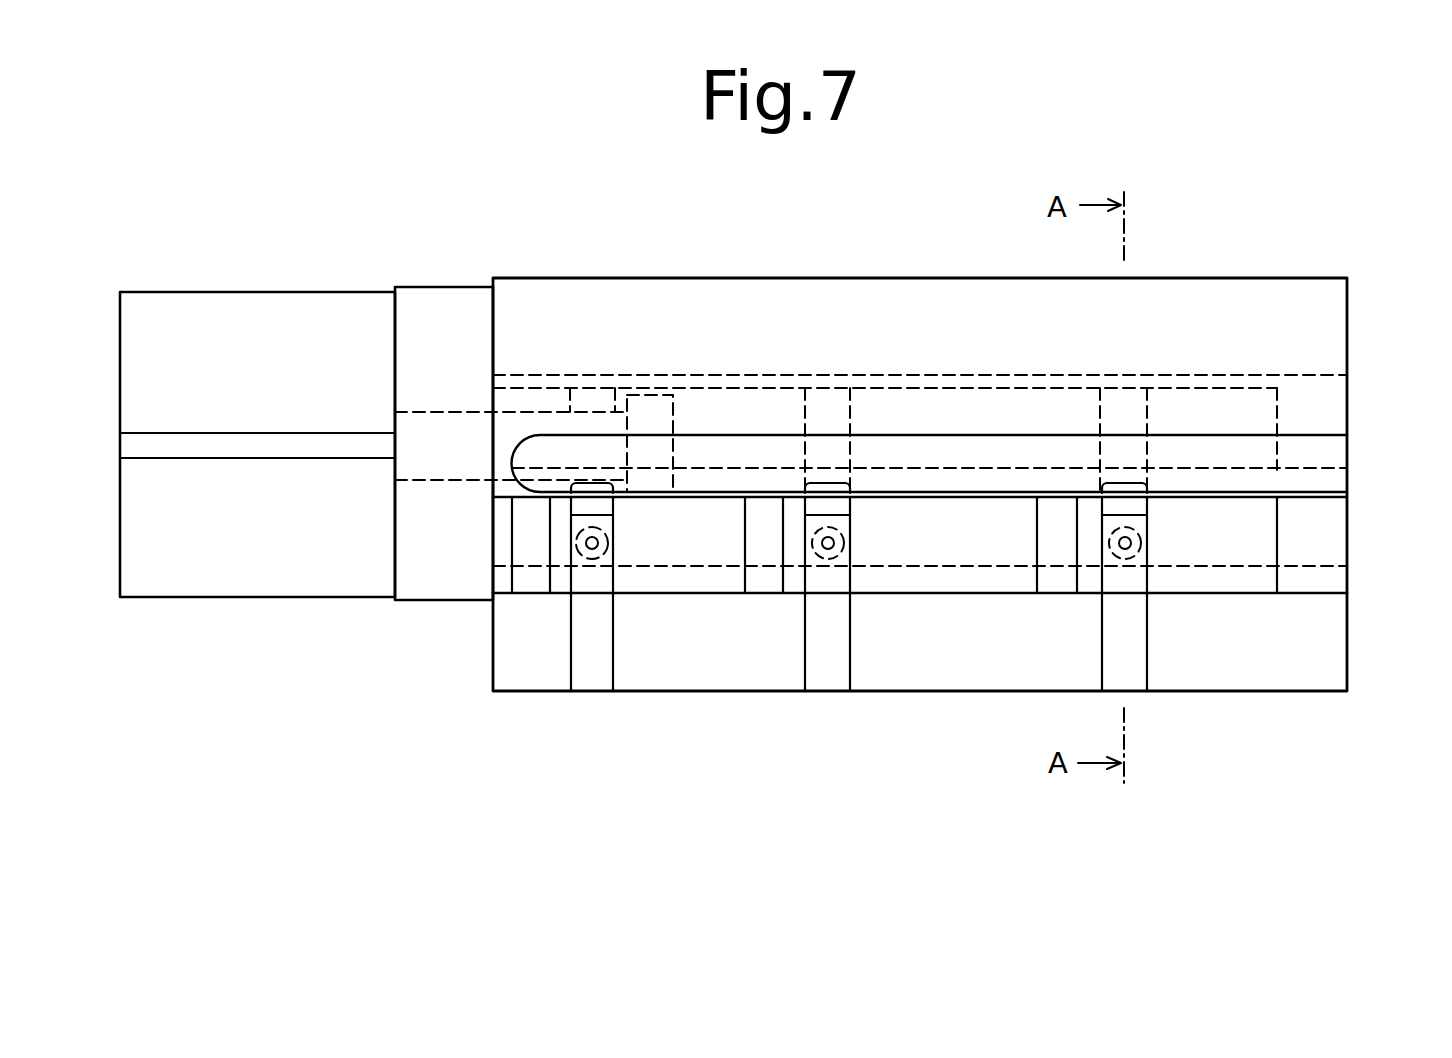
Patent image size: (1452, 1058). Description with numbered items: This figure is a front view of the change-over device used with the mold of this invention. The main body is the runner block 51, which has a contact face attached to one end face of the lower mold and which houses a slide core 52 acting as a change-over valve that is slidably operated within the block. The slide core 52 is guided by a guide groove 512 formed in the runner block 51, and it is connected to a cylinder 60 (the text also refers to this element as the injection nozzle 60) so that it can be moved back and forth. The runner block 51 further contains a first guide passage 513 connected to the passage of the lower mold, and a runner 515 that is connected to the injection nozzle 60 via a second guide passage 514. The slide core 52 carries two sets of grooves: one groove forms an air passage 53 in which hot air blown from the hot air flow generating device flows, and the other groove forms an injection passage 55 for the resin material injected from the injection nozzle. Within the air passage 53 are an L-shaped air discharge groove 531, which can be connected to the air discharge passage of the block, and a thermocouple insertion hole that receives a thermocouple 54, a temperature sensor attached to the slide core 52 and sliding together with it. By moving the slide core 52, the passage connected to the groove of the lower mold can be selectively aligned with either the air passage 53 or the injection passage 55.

The injection nozzle 60 is at (315, 320).
The runner block 51 is at (1235, 300).
The guide groove 512 is at (947, 373).
The slide core 52 is at (1258, 412).
The runner 515 is at (1267, 460).
The second guide passage 514 is at (1140, 495).
The L-shaped air discharge groove 531 is at (1140, 507).
The air passage 53 is at (1137, 576).
The thermocouple 54 is at (1115, 548).
The injection passage 55 is at (1045, 538).
The first guide passage 513 is at (1132, 660).